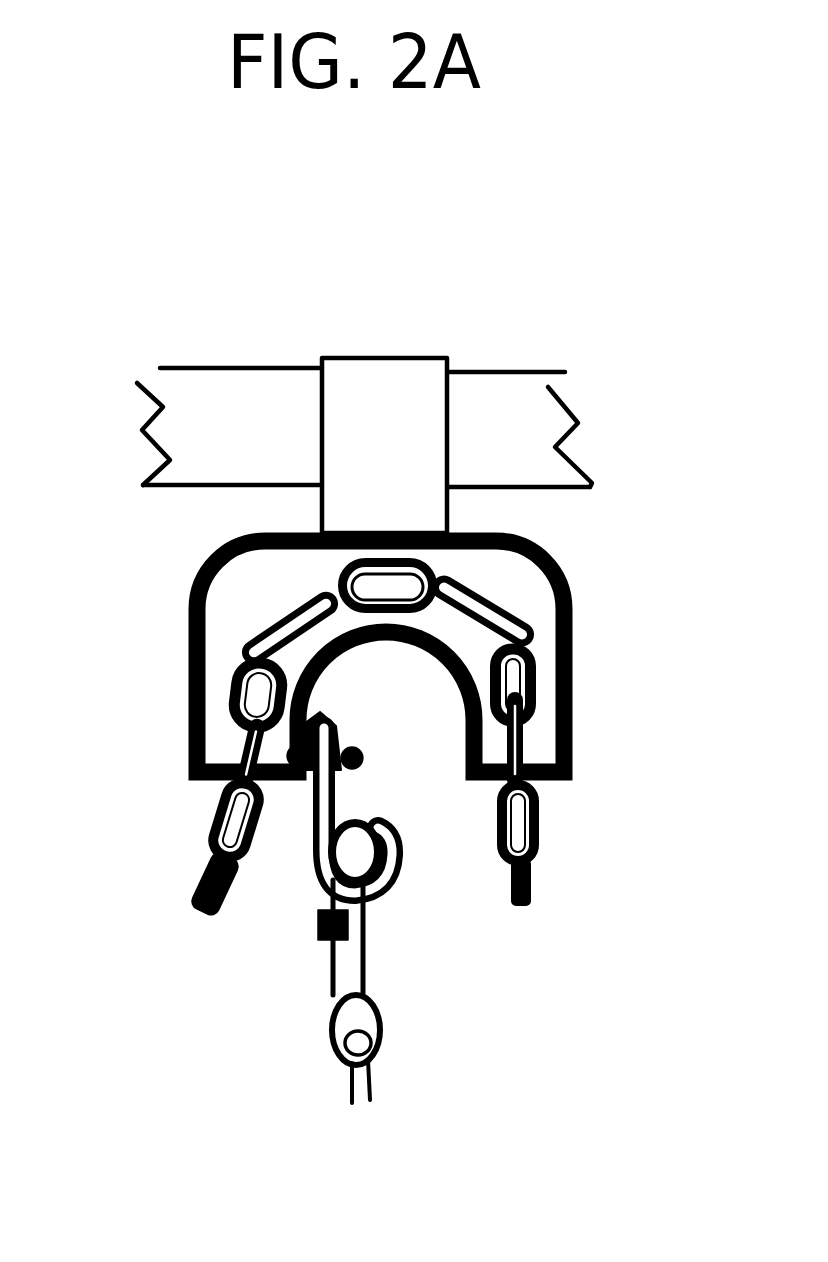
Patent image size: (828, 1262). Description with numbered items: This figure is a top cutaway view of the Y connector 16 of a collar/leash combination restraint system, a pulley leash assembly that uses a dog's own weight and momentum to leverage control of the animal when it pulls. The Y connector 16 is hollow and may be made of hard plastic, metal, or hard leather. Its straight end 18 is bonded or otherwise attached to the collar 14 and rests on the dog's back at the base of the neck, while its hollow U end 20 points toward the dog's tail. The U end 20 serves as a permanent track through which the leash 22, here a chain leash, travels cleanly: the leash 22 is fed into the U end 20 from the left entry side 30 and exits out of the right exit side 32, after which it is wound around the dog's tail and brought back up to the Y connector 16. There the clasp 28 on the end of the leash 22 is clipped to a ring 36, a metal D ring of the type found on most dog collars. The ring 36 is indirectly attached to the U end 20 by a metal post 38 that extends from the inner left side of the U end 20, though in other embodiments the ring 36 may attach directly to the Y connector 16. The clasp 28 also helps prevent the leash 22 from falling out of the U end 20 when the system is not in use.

The collar 14 is at (517, 407).
The Y connector 16 is at (231, 541).
The straight end 18 is at (380, 378).
The hollow U end 20 is at (517, 591).
The leash 22 is at (540, 848).
The clasp 28 is at (347, 963).
The left entry side 30 is at (210, 783).
The right exit side 32 is at (547, 787).
The ring 36 is at (323, 853).
The metal post 38 is at (337, 740).